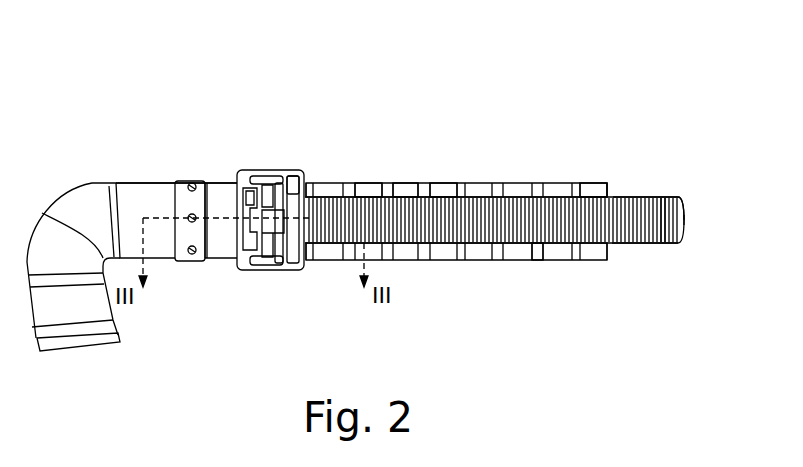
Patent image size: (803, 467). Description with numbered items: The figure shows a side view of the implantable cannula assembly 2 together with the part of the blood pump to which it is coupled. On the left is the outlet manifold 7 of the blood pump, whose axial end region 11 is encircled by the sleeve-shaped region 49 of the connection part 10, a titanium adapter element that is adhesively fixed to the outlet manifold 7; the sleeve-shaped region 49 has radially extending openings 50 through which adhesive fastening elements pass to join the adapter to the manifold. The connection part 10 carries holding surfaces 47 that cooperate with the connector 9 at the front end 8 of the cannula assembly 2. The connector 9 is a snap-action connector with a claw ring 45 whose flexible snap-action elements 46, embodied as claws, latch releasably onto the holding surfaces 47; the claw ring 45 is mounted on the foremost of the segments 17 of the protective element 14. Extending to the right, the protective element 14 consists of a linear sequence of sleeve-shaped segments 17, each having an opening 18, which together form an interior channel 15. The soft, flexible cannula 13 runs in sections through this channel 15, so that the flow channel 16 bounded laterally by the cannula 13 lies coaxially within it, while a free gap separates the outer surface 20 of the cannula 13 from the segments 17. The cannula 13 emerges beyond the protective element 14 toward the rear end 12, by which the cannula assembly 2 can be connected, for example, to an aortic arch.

The cannula assembly 2 is at (331, 150).
The outlet manifold 7 is at (42, 213).
The front end 8 is at (255, 150).
The connector 9 is at (292, 266).
The connection part 10 is at (210, 262).
The axial end region 11 is at (152, 196).
The rear end 12 is at (688, 158).
The cannula 13 is at (647, 244).
The protective element 14 is at (515, 169).
The channel 15 is at (537, 244).
The flow channel 16 is at (690, 220).
The segments 17 is at (369, 183).
The opening 18 is at (615, 215).
The outer surface 20 is at (673, 244).
The claw ring 45 is at (293, 176).
The snap-action elements 46 is at (266, 177).
The holding surfaces 47 is at (240, 266).
The sleeve-shaped region 49 is at (204, 183).
The openings 50 is at (193, 182).